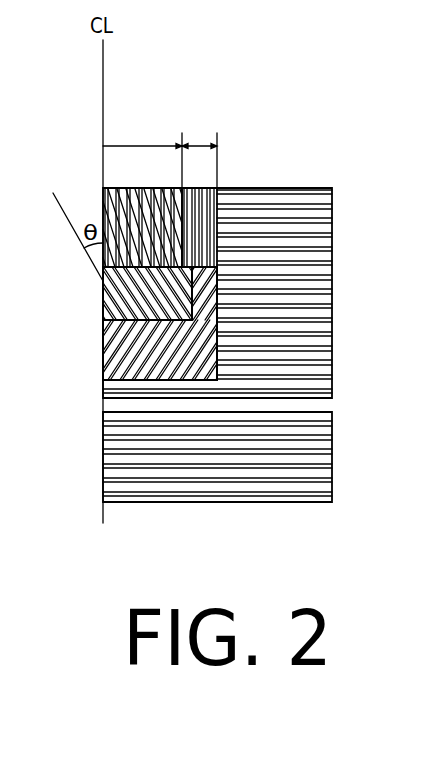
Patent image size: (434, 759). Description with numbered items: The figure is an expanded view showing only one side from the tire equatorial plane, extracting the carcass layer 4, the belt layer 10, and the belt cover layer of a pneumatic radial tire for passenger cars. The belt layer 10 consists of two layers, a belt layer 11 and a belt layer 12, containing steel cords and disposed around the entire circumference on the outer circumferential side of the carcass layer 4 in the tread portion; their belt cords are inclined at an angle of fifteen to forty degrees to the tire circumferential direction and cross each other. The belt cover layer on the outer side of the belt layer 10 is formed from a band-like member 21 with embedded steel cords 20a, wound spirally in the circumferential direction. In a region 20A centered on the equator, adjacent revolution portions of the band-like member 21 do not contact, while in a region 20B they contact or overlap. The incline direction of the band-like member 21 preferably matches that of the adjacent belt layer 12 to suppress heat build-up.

The carcass layer 4 is at (277, 208).
The belt layer 10 is at (53, 288).
The belt layer 11 is at (107, 348).
The belt layer 12 is at (108, 313).
The region 20A is at (137, 146).
The region 20B is at (194, 146).
The steel cords 20a is at (158, 193).
The band-like member 21 is at (126, 192).